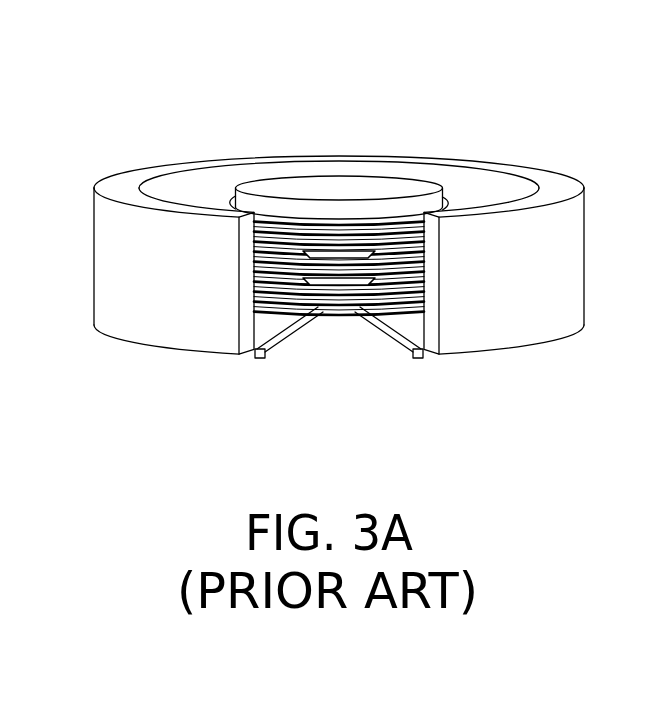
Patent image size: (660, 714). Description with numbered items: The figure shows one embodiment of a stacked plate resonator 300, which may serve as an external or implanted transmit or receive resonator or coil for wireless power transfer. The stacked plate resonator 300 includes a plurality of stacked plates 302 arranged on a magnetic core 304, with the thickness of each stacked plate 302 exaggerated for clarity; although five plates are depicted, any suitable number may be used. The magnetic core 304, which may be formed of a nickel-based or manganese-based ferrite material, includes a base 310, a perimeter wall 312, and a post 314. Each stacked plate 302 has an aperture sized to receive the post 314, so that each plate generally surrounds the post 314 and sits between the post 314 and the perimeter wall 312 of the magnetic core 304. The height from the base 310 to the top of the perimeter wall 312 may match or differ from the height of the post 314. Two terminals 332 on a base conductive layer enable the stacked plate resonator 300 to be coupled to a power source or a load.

The stacked plate resonator 300 is at (150, 128).
The stacked plate 302 is at (462, 183).
The magnetic core 304 is at (592, 170).
The base 310 is at (320, 338).
The perimeter wall 312 is at (168, 278).
The post 314 is at (327, 183).
The terminals 332 is at (382, 333).